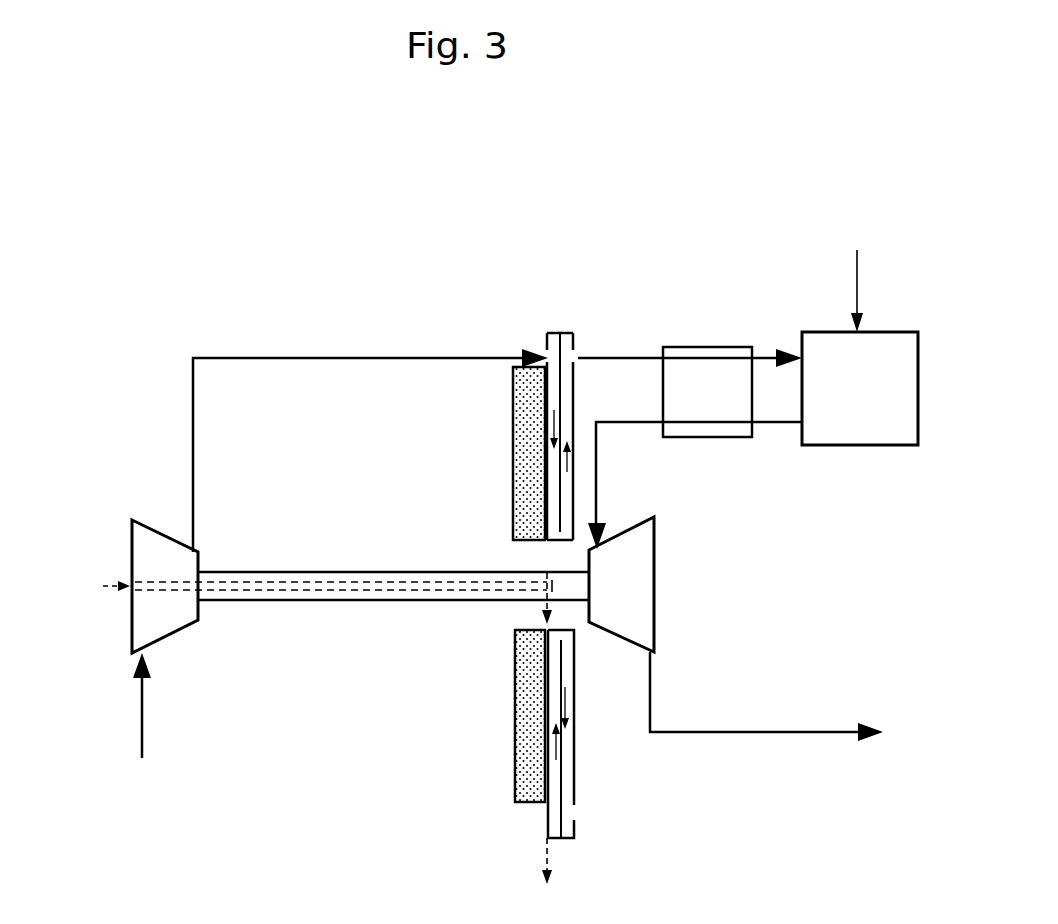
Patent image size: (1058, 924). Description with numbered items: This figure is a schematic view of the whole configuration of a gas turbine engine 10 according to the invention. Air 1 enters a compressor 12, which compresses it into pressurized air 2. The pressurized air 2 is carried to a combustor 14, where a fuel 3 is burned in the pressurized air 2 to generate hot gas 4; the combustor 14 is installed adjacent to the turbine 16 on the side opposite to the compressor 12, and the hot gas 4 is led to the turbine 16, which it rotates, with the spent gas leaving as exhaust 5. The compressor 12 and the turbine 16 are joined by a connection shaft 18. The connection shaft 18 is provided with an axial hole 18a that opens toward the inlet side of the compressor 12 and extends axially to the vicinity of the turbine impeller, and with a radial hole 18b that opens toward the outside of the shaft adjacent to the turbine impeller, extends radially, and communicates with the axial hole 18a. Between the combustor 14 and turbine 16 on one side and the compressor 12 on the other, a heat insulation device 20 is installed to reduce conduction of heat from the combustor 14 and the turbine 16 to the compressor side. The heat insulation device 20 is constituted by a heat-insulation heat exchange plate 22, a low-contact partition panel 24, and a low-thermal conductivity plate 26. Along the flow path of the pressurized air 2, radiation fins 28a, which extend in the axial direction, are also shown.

The gas turbine engine 10 is at (184, 318).
The compressor 12 is at (122, 501).
The combustor 14 is at (868, 427).
The turbine 16 is at (670, 605).
The connection shaft 18 is at (327, 561).
The axial hole 18a is at (303, 586).
The radial hole 18b is at (543, 573).
The heat insulation device 20 is at (497, 360).
The heat-insulation heat exchange plate 22 is at (556, 318).
The low-contact partition panel 24 is at (538, 816).
The low-thermal conductivity plate 26 is at (522, 432).
The radiation fins 28a is at (693, 347).
The air 1 is at (142, 733).
The pressurized air 2 is at (327, 357).
The fuel 3 is at (853, 280).
The hot gas 4 is at (778, 422).
The exhaust gas 5 is at (783, 732).